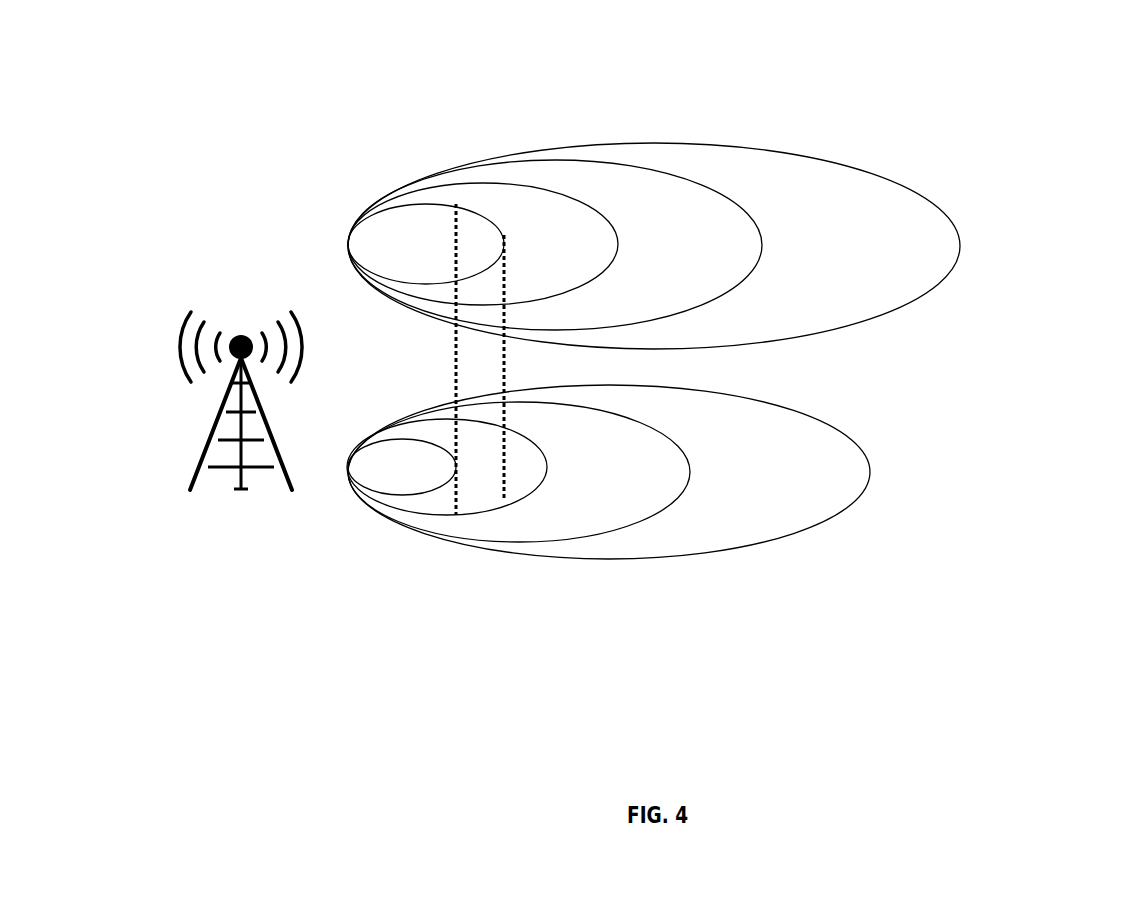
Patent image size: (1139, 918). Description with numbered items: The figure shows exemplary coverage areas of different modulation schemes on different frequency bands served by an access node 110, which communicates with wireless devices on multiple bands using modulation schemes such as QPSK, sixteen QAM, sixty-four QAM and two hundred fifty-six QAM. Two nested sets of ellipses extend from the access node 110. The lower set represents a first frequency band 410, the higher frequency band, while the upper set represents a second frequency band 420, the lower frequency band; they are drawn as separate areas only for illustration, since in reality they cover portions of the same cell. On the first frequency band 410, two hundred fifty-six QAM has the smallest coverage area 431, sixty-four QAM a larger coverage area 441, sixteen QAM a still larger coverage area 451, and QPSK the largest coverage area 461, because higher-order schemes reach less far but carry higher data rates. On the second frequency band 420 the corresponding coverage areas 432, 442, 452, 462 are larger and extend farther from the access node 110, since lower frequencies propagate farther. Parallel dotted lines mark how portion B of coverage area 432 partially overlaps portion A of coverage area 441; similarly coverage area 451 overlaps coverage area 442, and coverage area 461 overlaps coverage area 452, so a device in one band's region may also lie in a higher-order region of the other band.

The access node 110 is at (240, 312).
The first frequency band 410 is at (627, 526).
The second frequency band 420 is at (674, 197).
The coverage area of 256 QAM on first frequency band 431 is at (395, 487).
The coverage area of 256 QAM on second frequency band 432 is at (370, 234).
The coverage area of 64 QAM on first frequency band 441 is at (442, 505).
The coverage area of 64 QAM on second frequency band 442 is at (490, 192).
The coverage area of 16 QAM on first frequency band 451 is at (535, 527).
The coverage area of 16 QAM on second frequency band 452 is at (557, 170).
The coverage area of QPSK on first frequency band 461 is at (660, 546).
The coverage area of QPSK on second frequency band 462 is at (680, 153).